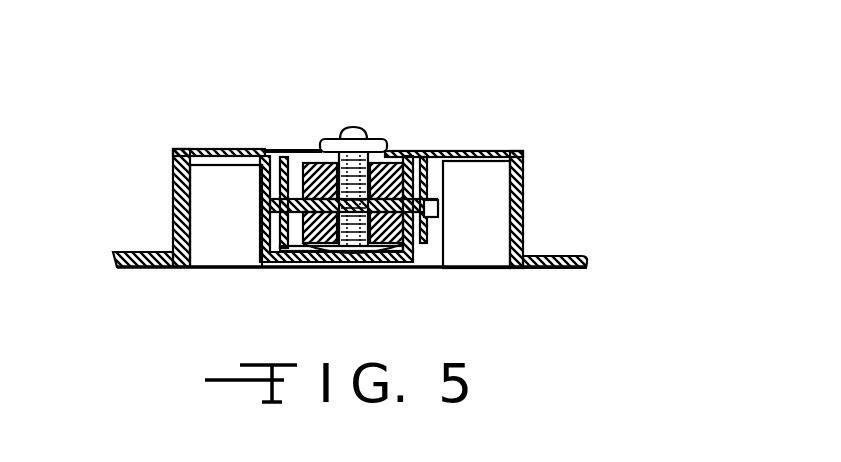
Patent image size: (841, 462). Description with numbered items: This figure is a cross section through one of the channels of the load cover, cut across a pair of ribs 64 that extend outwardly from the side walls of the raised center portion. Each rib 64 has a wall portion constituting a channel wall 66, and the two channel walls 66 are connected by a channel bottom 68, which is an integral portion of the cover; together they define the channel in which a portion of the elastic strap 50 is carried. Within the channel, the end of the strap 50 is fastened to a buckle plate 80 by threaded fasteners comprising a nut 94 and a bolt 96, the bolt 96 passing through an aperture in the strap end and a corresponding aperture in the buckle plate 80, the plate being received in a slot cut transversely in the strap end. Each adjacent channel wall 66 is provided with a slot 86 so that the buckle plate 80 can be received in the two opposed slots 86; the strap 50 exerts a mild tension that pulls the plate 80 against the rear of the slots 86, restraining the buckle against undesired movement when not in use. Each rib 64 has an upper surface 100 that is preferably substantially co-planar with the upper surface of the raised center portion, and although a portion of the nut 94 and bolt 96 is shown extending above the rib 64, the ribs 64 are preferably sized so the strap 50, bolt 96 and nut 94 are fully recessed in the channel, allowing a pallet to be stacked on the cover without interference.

The elastic strap 50 is at (307, 148).
The rib 64 is at (214, 130).
The channel wall 66 is at (260, 177).
The channel bottom 68 is at (460, 267).
The buckle plate 80 is at (283, 157).
The slot 86 is at (462, 201).
The nut 94 is at (325, 136).
The bolt 96 is at (348, 249).
The upper surface 100 is at (187, 148).